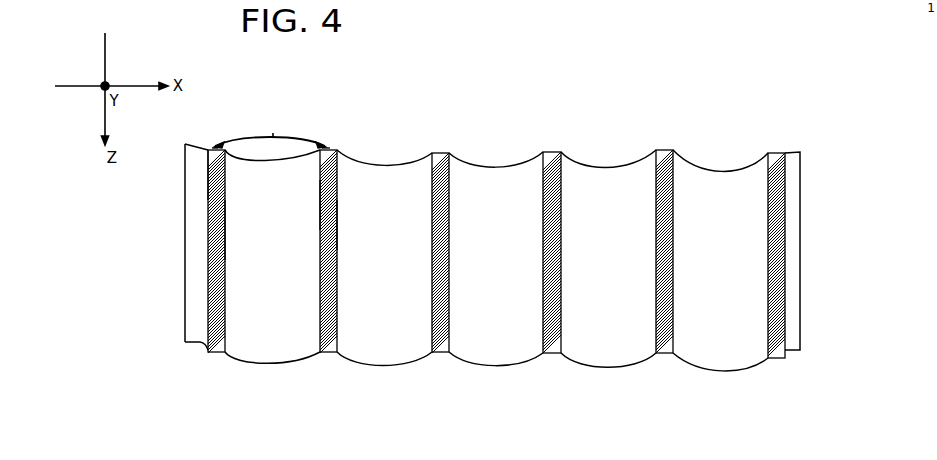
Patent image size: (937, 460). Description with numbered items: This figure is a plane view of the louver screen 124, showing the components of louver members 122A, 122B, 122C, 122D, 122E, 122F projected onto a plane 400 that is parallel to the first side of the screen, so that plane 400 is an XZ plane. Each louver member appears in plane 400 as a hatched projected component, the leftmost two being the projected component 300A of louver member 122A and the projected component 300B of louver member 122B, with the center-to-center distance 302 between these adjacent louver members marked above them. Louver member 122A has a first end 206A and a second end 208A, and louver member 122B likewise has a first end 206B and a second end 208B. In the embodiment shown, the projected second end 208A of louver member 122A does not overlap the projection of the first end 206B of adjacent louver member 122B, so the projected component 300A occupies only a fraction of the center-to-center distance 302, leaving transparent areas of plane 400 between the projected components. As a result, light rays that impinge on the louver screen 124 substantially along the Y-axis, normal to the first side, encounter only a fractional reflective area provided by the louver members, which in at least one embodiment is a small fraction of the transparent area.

The louver screen 124 is at (723, 148).
The louver member 122A is at (212, 338).
The louver member 122B is at (323, 346).
The louver member 122C is at (430, 355).
The louver member 122D is at (557, 343).
The louver member 122E is at (667, 340).
The louver member 122F is at (778, 333).
The plane 400 is at (196, 252).
The projected component 300A is at (213, 148).
The projected component 300B is at (333, 149).
The center-to-center distance 302 is at (270, 131).
The first end 206A is at (208, 149).
The second end 208A is at (228, 252).
The first end 206B is at (320, 204).
The second end 208B is at (337, 236).